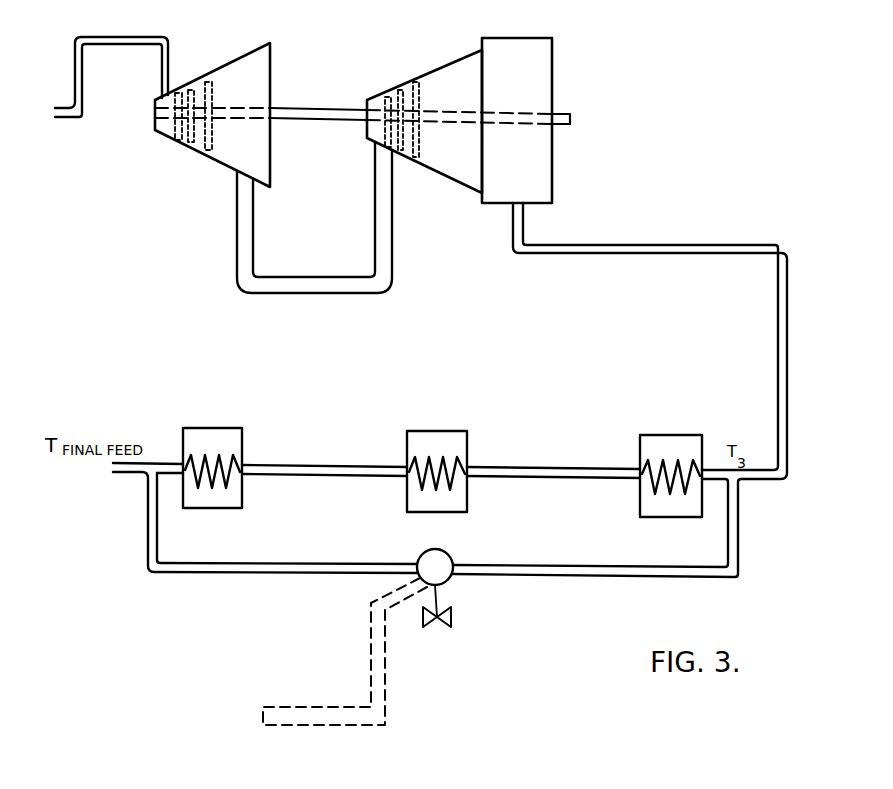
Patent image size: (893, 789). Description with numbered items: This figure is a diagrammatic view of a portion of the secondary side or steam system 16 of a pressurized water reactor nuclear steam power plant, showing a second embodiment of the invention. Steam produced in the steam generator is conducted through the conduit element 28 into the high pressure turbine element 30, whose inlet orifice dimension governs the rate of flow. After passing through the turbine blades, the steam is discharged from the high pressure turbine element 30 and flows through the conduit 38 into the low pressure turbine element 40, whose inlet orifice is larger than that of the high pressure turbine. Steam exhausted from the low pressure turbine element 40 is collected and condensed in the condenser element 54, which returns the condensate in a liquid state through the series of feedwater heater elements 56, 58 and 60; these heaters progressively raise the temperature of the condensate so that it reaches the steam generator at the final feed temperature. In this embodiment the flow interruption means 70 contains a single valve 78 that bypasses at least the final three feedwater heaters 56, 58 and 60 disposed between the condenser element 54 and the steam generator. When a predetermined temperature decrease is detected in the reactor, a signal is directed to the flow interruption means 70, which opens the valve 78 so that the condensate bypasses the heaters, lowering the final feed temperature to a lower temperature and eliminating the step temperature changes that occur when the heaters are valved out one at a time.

The conduit element 28 is at (111, 60).
The high pressure turbine element 30 is at (318, 27).
The secondary side or steam system 16 is at (368, 346).
The low pressure turbine element 40 is at (468, 103).
The conduit 38 is at (314, 217).
The condenser element 54 is at (650, 259).
The feedwater heater element 56 is at (227, 452).
The feedwater heater element 58 is at (450, 455).
The feedwater heater element 60 is at (681, 459).
The valve 78 is at (458, 577).
The flow interruption means 70 is at (334, 672).